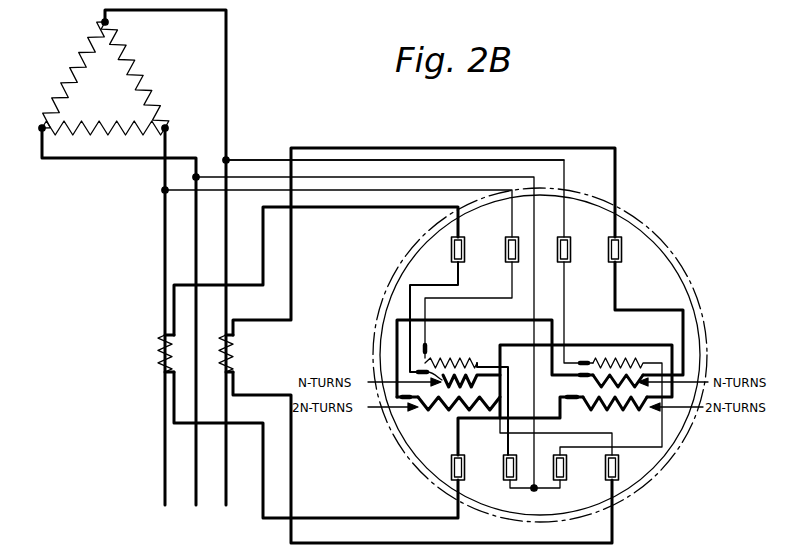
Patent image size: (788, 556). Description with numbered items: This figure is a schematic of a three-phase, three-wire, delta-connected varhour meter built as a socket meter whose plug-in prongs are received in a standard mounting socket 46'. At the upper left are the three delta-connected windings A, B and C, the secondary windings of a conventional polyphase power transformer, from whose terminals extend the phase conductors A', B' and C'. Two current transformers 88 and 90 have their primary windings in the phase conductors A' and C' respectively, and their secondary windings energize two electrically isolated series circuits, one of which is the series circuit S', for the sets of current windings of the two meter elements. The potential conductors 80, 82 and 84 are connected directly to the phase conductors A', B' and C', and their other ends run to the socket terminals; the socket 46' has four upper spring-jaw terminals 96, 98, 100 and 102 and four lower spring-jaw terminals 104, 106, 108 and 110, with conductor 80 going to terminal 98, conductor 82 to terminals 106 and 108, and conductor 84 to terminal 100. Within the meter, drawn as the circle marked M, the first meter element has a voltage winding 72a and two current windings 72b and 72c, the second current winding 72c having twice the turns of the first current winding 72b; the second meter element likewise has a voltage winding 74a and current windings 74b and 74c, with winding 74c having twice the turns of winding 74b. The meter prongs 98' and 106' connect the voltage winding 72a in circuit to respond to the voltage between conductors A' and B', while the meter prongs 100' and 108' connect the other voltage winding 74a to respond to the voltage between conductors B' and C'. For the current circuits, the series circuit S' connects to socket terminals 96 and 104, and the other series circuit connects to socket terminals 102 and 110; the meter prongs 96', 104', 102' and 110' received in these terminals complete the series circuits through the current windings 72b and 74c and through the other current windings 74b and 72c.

The delta-connected winding A is at (176, 312).
The delta-connected winding B is at (105, 312).
The delta-connected winding C is at (148, 257).
The phase conductor A' is at (157, 522).
The phase conductor B' is at (191, 522).
The phase conductor C' is at (221, 522).
The potential conductor 82 is at (213, 178).
The potential conductor 80 is at (190, 192).
The potential conductor 84 is at (258, 164).
The series circuit S' is at (316, 362).
The current transformer 88 is at (158, 365).
The current transformer 90 is at (233, 358).
The motor M is at (380, 300).
The mounting socket 46' is at (521, 355).
The upper spring-jaw terminal 96 is at (423, 244).
The meter prong 96' is at (434, 321).
The upper spring-jaw terminal 98 is at (496, 239).
The meter prong 98' is at (468, 310).
The upper spring-jaw terminal 100 is at (580, 237).
The meter prong 100' is at (584, 312).
The upper spring-jaw terminal 102 is at (647, 236).
The meter prong 102' is at (641, 274).
The voltage winding 72a is at (450, 358).
The first current winding 72b is at (424, 372).
The second current winding 72c is at (424, 412).
The voltage winding 74a is at (617, 358).
The first current winding 74b is at (652, 374).
The second current winding 74c is at (650, 412).
The lower spring-jaw terminal 104 is at (416, 471).
The meter prong 104' is at (428, 440).
The lower spring-jaw terminal 106 is at (513, 482).
The meter prong 106' is at (483, 442).
The lower spring-jaw terminal 108 is at (561, 483).
The meter prong 108' is at (583, 434).
The lower spring-jaw terminal 110 is at (647, 473).
The meter prong 110' is at (578, 436).